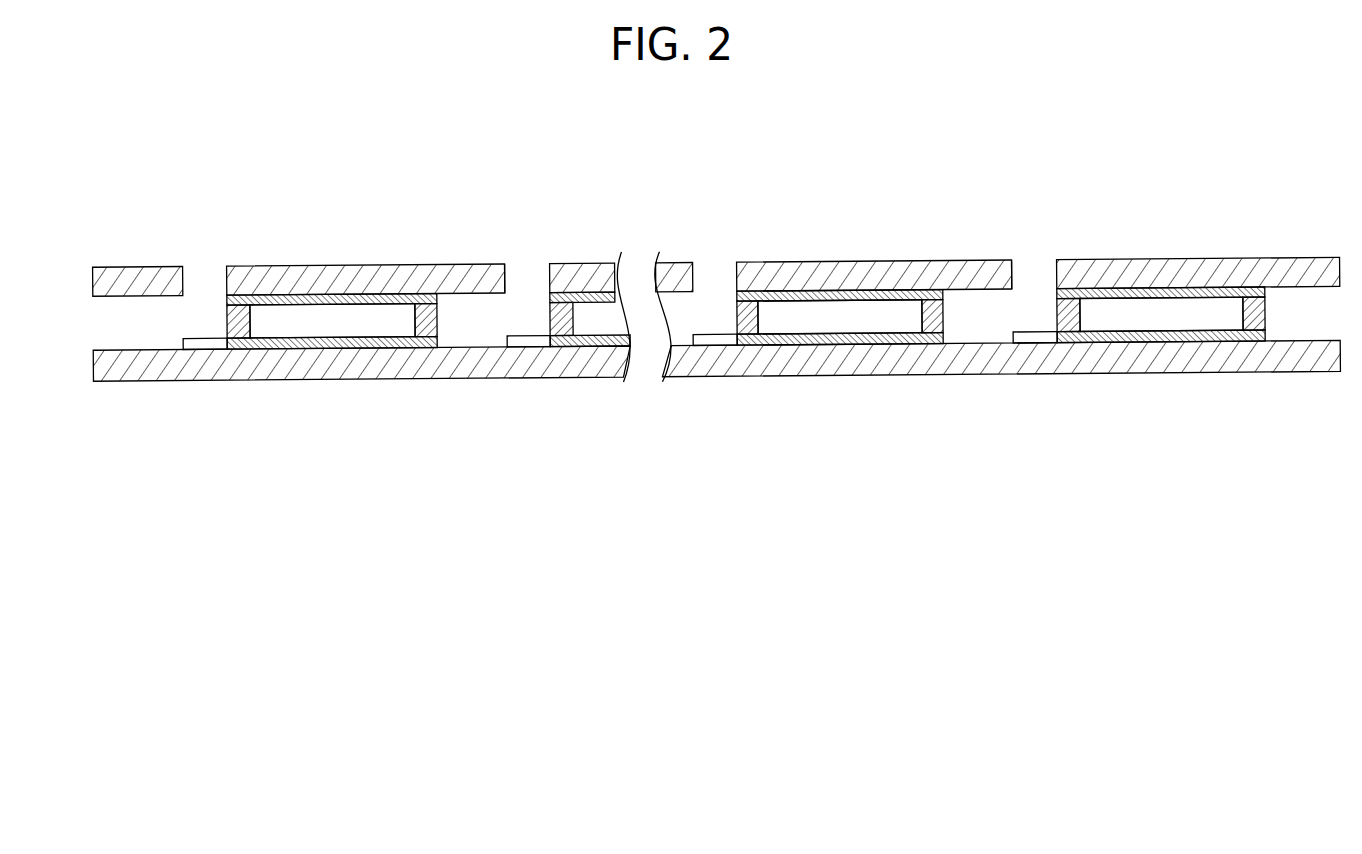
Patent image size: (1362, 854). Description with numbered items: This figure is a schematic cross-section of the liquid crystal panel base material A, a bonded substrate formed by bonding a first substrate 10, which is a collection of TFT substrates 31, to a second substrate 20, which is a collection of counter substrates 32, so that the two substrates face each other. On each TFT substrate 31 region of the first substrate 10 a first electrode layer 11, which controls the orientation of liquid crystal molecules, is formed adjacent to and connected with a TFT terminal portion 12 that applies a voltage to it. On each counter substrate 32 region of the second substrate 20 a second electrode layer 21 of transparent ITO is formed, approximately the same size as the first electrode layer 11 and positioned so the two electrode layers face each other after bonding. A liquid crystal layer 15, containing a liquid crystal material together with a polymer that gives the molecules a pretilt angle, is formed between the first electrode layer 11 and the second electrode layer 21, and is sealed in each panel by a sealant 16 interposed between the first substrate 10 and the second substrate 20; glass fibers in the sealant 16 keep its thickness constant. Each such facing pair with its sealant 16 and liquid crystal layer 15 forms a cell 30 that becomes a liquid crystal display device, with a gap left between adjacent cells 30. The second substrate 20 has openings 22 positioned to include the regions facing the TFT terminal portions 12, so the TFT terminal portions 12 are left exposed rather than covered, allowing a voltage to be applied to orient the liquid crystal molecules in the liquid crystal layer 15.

The liquid crystal panel base material A is at (127, 160).
The first substrate 10 is at (356, 382).
The first electrode layer 11 is at (310, 348).
The TFT terminal portion 12 is at (527, 336).
The liquid crystal layer 15 is at (873, 320).
The sealant 16 is at (241, 334).
The second substrate 20 is at (418, 262).
The second electrode layer 21 is at (367, 296).
The opening 22 is at (514, 268).
The cell 30 is at (1097, 258).
The TFT substrate 31 is at (695, 377).
The counter substrate 32 is at (775, 262).